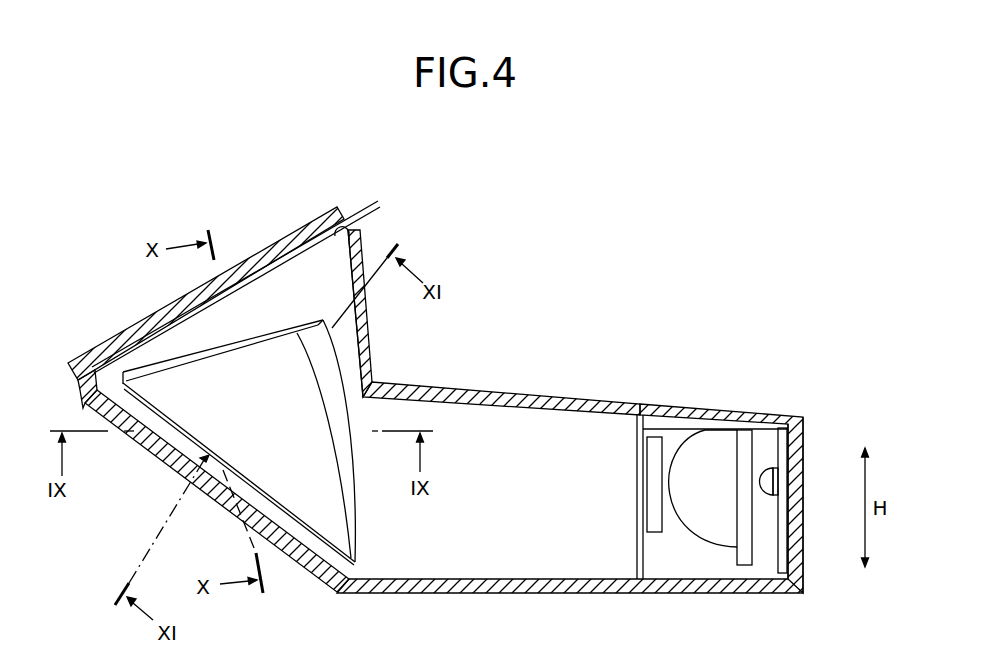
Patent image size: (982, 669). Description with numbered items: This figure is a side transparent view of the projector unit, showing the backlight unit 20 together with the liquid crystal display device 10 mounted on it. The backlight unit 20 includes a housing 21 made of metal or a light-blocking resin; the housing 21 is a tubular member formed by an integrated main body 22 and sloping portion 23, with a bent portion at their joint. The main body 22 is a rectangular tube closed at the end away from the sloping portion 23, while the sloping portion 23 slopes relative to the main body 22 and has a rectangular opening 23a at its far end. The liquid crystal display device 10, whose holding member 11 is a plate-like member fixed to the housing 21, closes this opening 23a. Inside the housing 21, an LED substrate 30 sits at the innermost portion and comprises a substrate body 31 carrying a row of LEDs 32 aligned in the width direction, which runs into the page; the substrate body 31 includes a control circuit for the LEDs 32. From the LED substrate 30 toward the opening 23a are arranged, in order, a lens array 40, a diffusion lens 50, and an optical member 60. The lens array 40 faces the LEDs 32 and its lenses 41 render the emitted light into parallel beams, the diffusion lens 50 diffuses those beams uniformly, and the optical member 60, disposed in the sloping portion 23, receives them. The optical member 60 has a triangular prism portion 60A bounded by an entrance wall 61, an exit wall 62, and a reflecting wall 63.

The liquid crystal display device 10 is at (318, 174).
The holding member 11 is at (342, 200).
The backlight unit 20 is at (468, 387).
The housing 21 is at (578, 288).
The main body 22 is at (551, 383).
The sloping portion 23 is at (381, 333).
The opening 23a is at (361, 240).
The LED substrate 30 is at (783, 411).
The substrate body 31 is at (805, 425).
The LEDs 32 is at (763, 445).
The lens array 40 is at (720, 415).
The lenses 41 is at (690, 432).
The diffusion lens 50 is at (653, 423).
The optical member 60 is at (239, 358).
The prism portion 60A is at (296, 305).
The entrance wall 61 is at (358, 376).
The exit wall 62 is at (223, 333).
The reflecting wall 63 is at (205, 471).